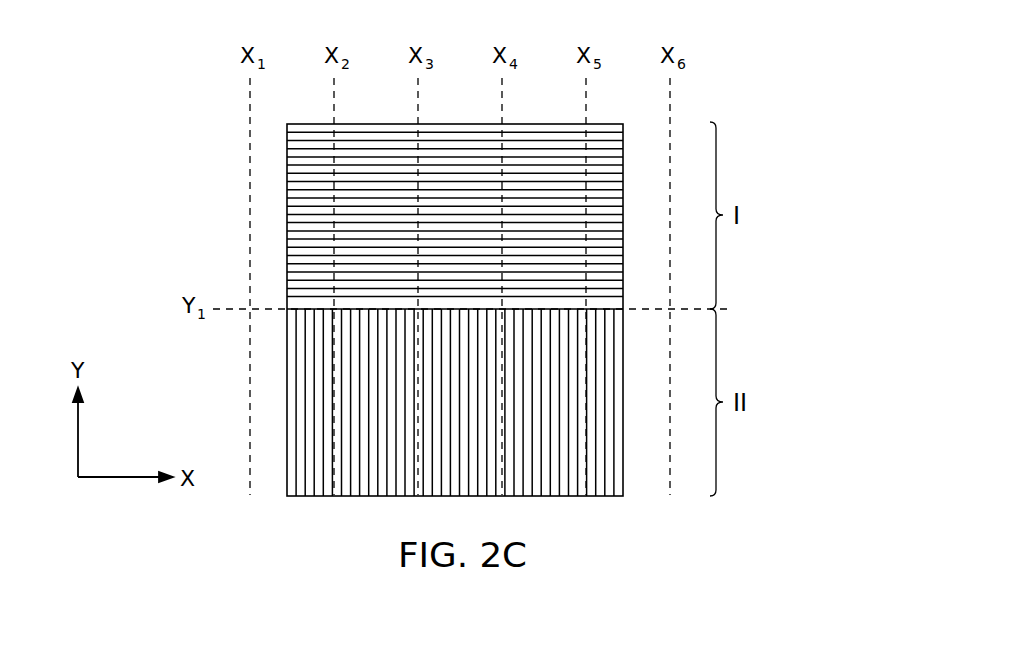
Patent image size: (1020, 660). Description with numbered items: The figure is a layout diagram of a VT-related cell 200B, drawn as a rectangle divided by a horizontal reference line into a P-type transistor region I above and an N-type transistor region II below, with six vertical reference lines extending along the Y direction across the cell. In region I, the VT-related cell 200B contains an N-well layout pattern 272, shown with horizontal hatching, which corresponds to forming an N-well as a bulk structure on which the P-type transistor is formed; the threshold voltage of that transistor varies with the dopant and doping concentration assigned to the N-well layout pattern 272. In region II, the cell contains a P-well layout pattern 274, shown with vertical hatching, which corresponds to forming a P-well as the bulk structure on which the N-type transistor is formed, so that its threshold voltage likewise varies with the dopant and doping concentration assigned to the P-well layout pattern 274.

The VT-related cell 200B is at (748, 43).
The N-well layout pattern 272 is at (609, 152).
The P-well layout pattern 274 is at (608, 483).